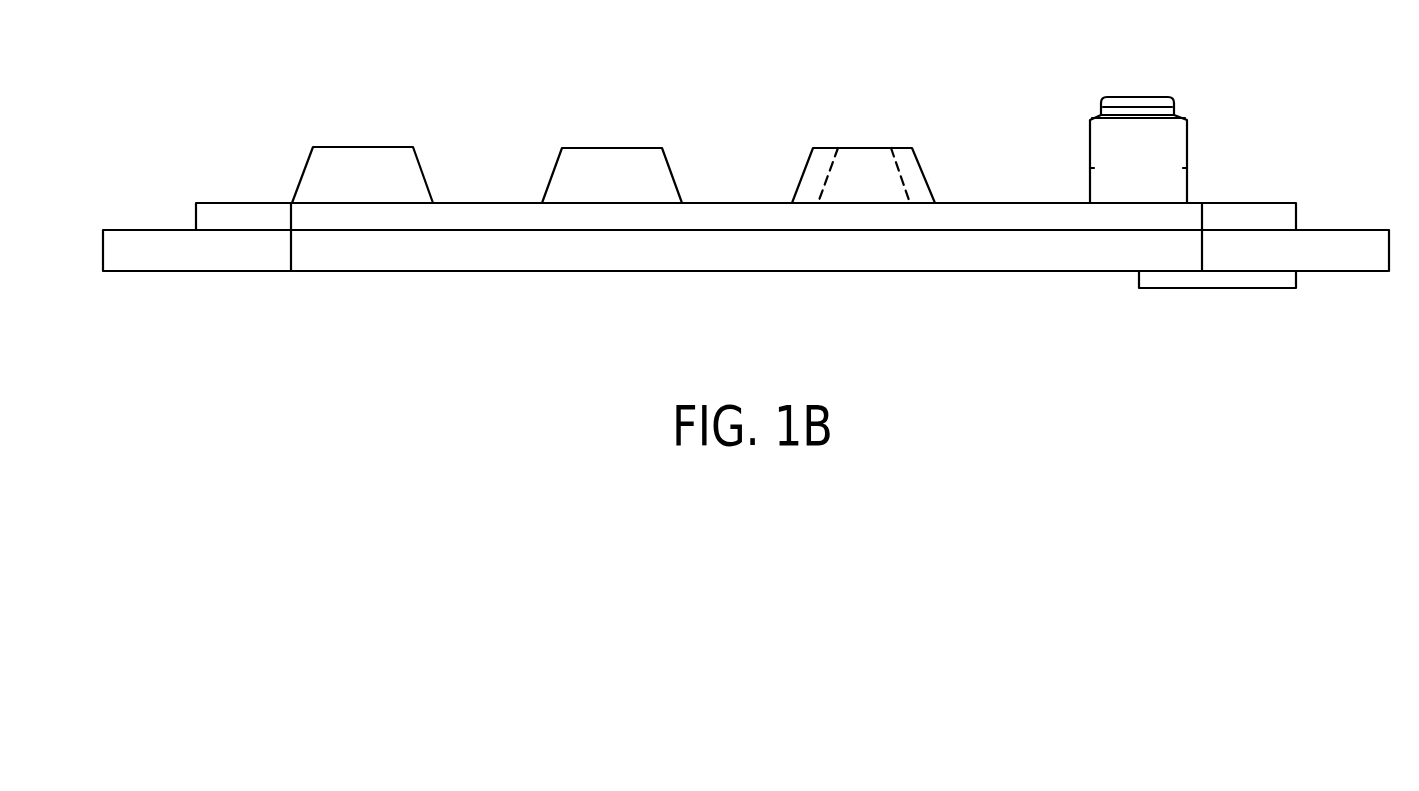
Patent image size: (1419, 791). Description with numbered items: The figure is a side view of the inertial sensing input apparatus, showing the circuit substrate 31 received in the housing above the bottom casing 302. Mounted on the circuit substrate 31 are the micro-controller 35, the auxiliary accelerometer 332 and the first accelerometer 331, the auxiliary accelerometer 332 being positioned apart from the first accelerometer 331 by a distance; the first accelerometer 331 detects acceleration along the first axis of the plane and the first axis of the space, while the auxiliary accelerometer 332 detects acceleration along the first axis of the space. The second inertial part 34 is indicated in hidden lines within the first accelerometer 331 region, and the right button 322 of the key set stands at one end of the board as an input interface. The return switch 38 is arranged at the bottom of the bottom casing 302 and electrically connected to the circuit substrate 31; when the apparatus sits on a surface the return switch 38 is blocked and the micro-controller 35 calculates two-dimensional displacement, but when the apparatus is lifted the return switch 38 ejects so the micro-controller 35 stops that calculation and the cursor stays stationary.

The bottom casing 302 is at (120, 253).
The circuit substrate 31 is at (206, 215).
The micro-controller 35 is at (330, 160).
The auxiliary accelerometer 332 is at (593, 154).
The first accelerometer 331 is at (908, 153).
The second inertial part 34 is at (851, 156).
The right button 322 is at (1174, 106).
The return switch 38 is at (1280, 282).